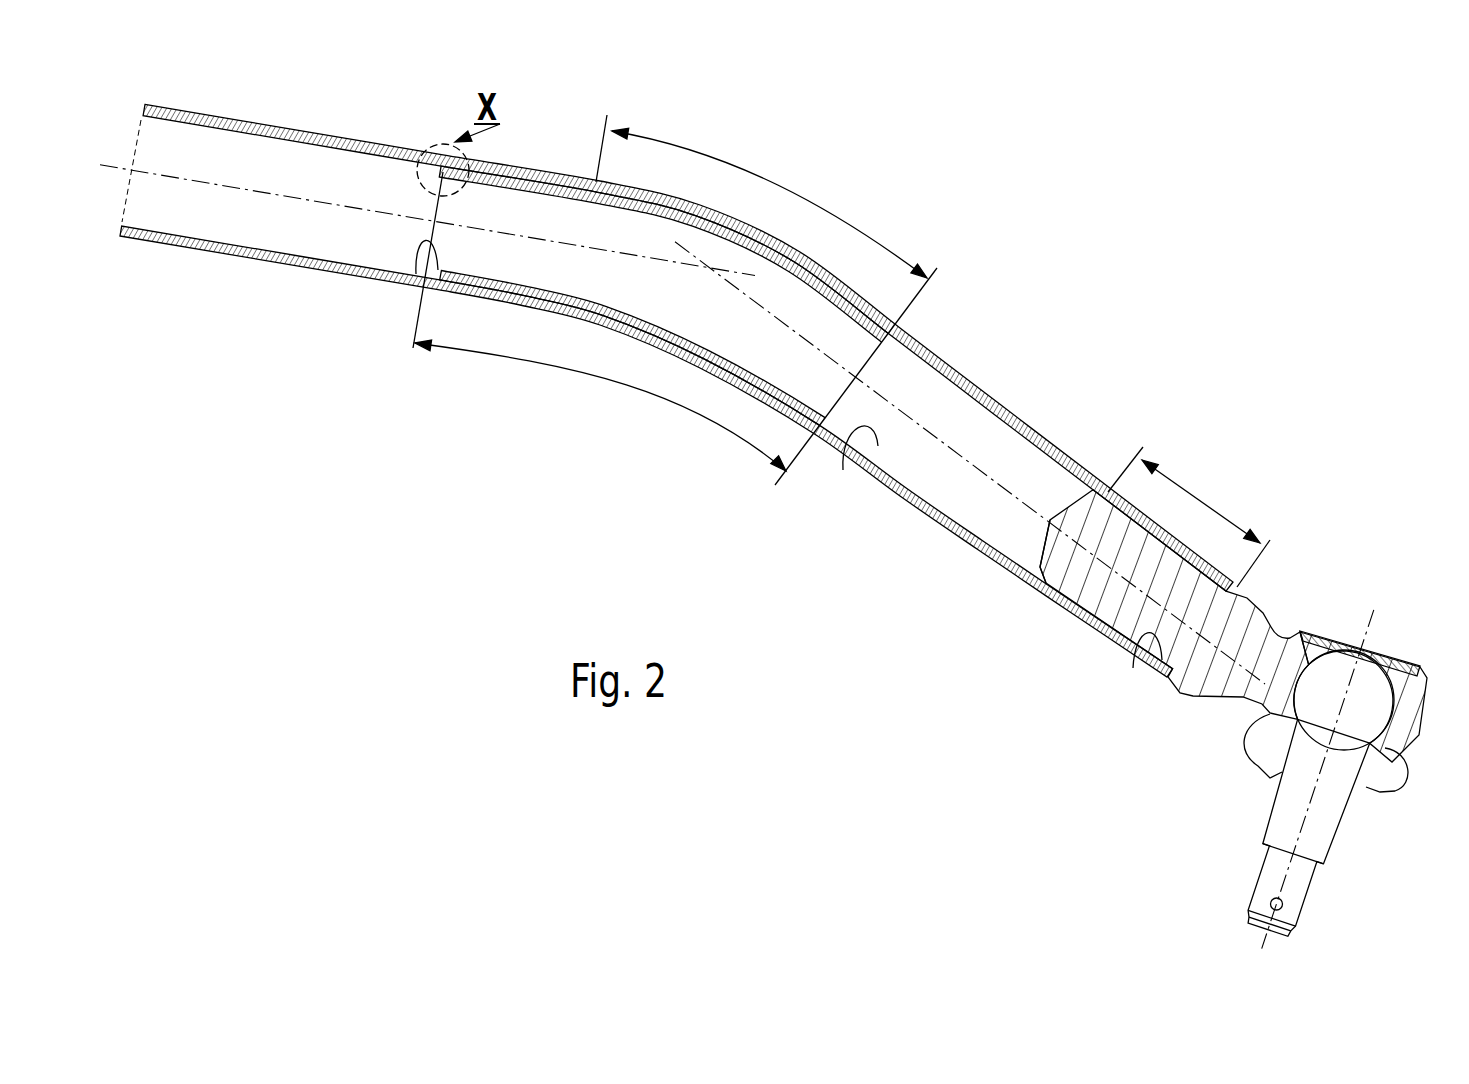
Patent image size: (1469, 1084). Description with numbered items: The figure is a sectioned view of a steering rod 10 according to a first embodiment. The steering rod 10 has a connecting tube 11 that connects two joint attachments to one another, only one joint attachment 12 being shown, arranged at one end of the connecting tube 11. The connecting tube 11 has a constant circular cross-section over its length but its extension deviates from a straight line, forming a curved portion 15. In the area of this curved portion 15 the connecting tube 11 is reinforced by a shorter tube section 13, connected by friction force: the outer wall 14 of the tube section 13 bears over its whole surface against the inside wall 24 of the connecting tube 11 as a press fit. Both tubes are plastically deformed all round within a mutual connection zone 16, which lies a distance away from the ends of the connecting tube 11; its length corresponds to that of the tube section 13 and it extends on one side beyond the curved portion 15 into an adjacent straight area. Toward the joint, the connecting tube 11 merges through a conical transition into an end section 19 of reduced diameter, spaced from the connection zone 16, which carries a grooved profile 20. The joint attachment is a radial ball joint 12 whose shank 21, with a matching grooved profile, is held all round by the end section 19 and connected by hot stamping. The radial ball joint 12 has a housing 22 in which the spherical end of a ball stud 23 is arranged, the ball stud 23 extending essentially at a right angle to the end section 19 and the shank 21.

The steering rod 10 is at (1080, 302).
The connecting tube 11 is at (237, 258).
The joint attachment (radial ball joint) 12 is at (1303, 595).
The tube section 13 is at (414, 268).
The outer wall 14 is at (553, 180).
The curved portion 15 is at (833, 212).
The connection zone 16 is at (557, 370).
The end section 19 is at (1192, 490).
The grooved profile 20 is at (1143, 668).
The shank 21 is at (1058, 568).
The housing 22 is at (1420, 677).
The ball stud 23 is at (1346, 842).
The inside wall 24 is at (847, 462).